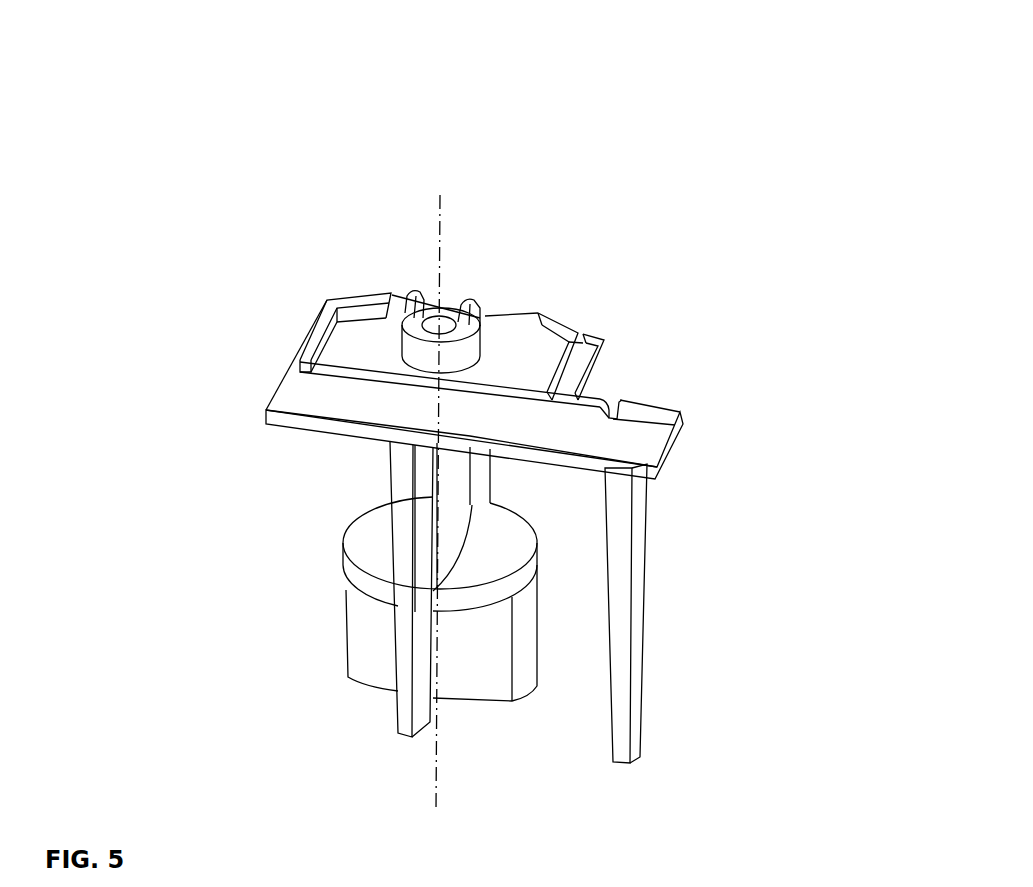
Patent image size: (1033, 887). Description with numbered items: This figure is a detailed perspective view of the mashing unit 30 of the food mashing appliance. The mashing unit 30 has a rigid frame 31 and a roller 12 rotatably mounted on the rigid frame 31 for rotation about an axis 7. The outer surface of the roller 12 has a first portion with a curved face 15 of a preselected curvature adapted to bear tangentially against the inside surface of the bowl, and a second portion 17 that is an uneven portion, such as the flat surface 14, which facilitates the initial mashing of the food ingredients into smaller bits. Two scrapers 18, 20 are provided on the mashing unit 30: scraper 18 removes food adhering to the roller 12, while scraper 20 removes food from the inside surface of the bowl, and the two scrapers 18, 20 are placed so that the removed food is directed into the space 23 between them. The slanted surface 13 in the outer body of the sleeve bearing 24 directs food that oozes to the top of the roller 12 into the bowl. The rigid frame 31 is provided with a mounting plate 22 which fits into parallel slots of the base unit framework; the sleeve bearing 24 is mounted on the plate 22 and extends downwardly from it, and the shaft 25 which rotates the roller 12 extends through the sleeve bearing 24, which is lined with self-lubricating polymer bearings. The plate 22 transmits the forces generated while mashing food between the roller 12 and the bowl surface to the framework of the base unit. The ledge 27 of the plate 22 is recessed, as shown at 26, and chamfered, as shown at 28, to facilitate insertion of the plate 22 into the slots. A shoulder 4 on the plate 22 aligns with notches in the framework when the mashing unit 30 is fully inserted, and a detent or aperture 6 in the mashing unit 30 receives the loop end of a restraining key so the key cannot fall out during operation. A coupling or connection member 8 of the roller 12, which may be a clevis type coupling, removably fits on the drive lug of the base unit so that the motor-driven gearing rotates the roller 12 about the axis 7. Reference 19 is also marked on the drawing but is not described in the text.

The mashing unit 30 is at (537, 97).
The axis 7 is at (432, 223).
The rigid frame 31 is at (428, 414).
The shoulder 4 is at (342, 372).
The detent or aperture 6 is at (622, 394).
The mounting plate 22 is at (305, 330).
The shaft 25 is at (437, 330).
The coupling or connection member 8 is at (421, 301).
The recess 26 is at (567, 311).
The chamfer 28 is at (593, 320).
The ledge 27 is at (569, 360).
The scraper 18 is at (407, 655).
The second portion 17 is at (368, 655).
The scraper 20 is at (638, 670).
The sleeve bearing 24 is at (477, 491).
The ramp 19 is at (518, 538).
The roller 12 is at (326, 575).
The slanted surface 13 is at (453, 550).
The flat surface 14 is at (378, 636).
The curved face 15 is at (522, 587).
The space 23 is at (455, 580).